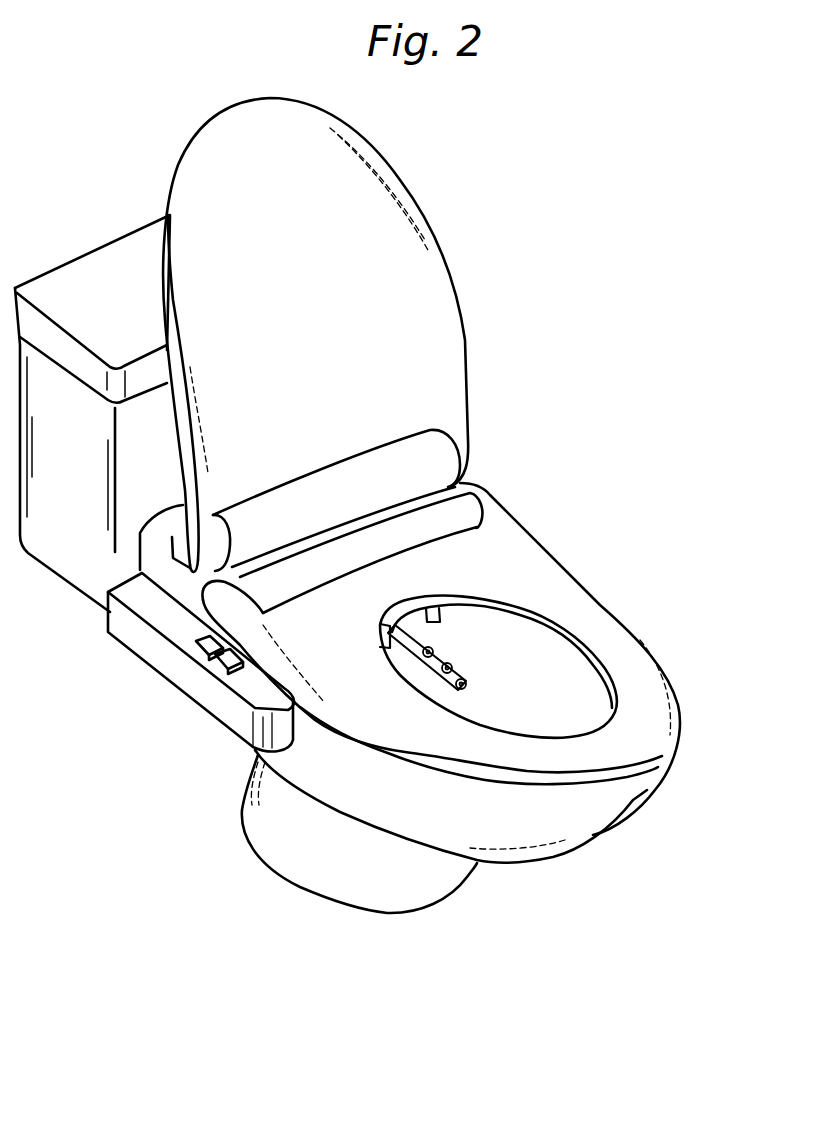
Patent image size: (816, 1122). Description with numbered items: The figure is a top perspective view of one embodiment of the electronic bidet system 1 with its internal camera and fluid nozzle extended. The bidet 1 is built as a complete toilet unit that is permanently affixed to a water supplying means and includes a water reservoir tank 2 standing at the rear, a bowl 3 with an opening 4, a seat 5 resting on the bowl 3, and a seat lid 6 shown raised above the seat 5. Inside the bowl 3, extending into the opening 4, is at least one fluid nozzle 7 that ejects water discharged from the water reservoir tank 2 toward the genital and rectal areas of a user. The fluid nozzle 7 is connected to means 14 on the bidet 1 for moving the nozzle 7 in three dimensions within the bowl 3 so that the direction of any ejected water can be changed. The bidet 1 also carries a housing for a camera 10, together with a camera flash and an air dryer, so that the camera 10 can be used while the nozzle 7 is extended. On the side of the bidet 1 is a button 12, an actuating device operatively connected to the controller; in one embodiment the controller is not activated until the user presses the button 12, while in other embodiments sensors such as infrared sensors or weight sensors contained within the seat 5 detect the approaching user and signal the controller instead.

The electronic bidet system 1 is at (402, 935).
The water reservoir tank 2 is at (123, 268).
The bowl 3 is at (557, 830).
The opening 4 is at (445, 704).
The seat 5 is at (660, 715).
The seat lid 6 is at (213, 157).
The fluid nozzle 7 is at (467, 685).
The camera 10 is at (447, 662).
The button 12 is at (210, 638).
The means for moving the nozzle 14 is at (398, 636).